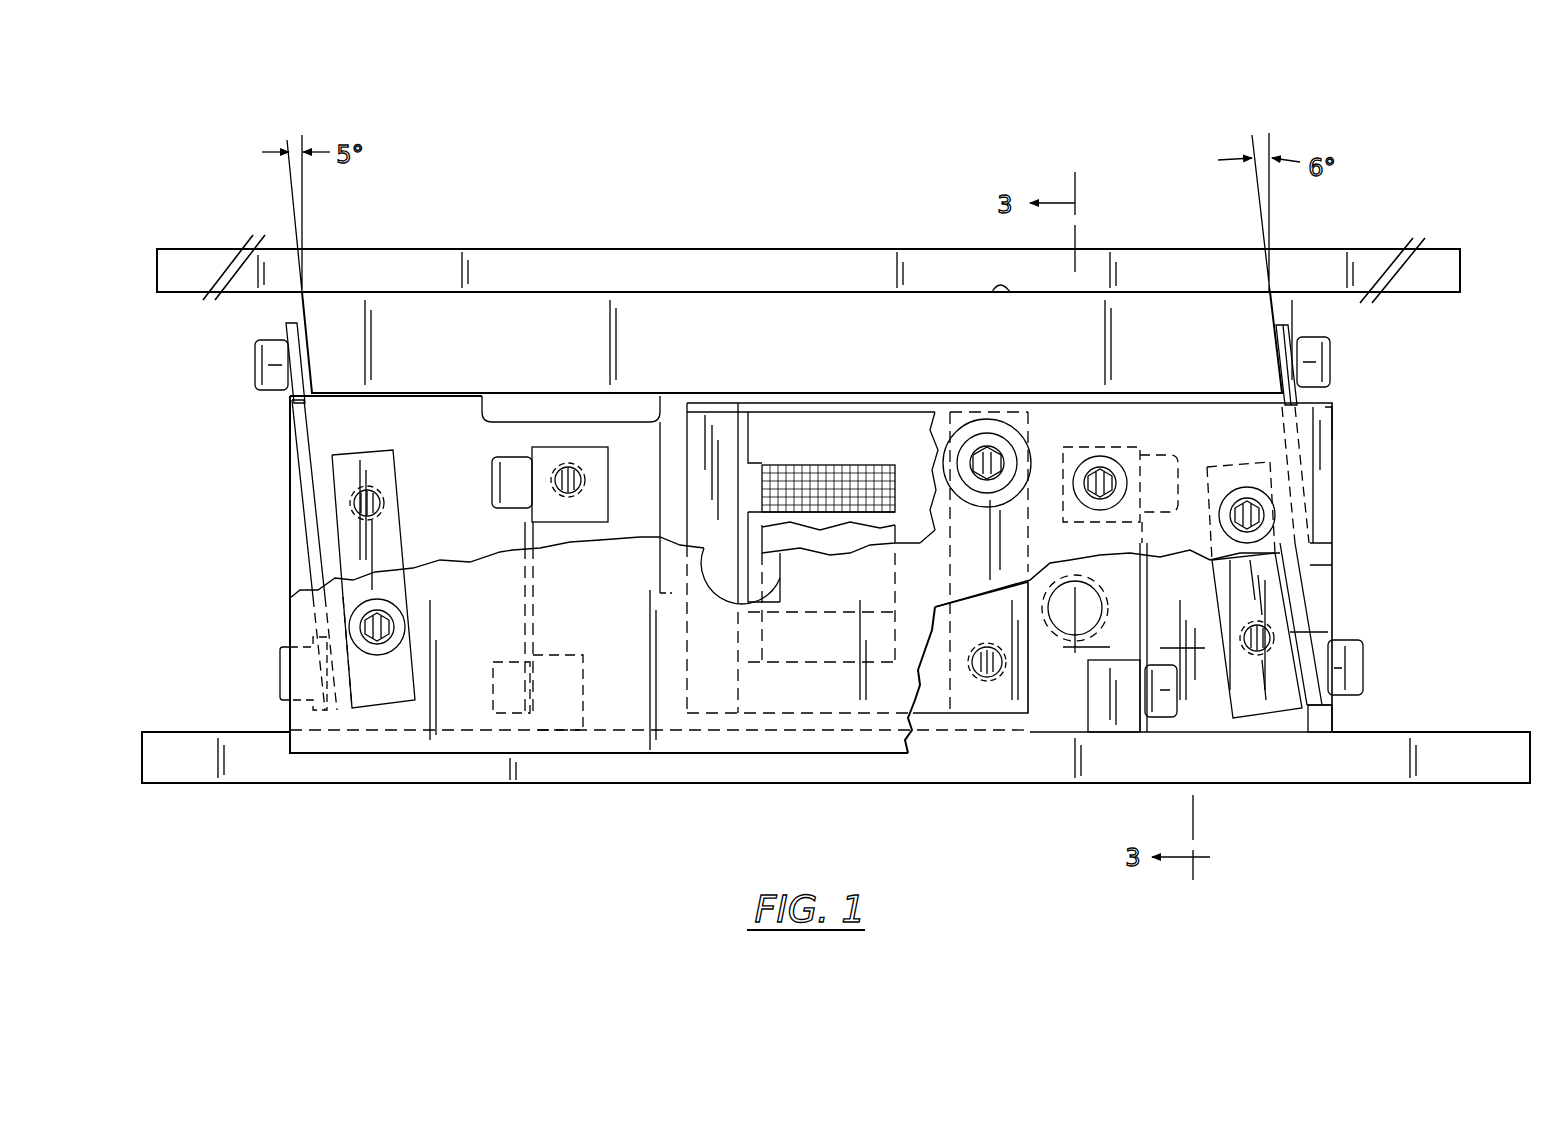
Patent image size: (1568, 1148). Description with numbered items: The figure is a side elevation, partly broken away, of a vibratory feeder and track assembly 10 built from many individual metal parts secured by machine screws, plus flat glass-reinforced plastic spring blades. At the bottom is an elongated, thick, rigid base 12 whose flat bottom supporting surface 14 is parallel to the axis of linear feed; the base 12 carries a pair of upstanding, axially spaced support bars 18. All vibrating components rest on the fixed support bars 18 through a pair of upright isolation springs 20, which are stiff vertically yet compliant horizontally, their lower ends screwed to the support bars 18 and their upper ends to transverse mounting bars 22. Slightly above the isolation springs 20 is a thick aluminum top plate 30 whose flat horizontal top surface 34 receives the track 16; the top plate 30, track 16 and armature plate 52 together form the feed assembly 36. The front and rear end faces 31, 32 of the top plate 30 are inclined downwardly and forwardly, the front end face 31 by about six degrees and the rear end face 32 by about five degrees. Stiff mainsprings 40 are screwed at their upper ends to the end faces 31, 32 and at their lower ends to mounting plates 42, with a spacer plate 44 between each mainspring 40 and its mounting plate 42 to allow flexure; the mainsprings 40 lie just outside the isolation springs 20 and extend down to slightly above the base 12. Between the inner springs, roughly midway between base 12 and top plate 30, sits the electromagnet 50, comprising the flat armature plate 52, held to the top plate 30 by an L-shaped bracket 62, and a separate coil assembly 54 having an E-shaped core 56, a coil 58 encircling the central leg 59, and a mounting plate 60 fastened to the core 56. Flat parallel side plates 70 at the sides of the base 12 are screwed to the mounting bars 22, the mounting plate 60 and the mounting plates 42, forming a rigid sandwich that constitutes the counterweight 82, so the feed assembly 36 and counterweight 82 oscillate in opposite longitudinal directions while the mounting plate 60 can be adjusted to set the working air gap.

The vibratory feeder and track assembly 10 is at (1400, 150).
The base 12 is at (1468, 733).
The bottom supporting surface 14 is at (1262, 785).
The track 16 is at (1170, 249).
The support bars 18 is at (553, 655).
The isolation springs 20 is at (525, 540).
The mounting bars 22 is at (545, 449).
The top plate 30 is at (741, 338).
The front end face 31 is at (1277, 308).
The rear end face 32 is at (300, 305).
The top surface 34 is at (995, 292).
The feed assembly 36 is at (838, 247).
The mainsprings 40 is at (305, 462).
The mounting plates 42 is at (363, 450).
The spacer plate 44 is at (330, 712).
The electromagnet 50 is at (765, 430).
The armature plate 52 is at (713, 418).
The coil assembly 54 is at (862, 411).
The E-shaped core 56 is at (864, 450).
The coil 58 is at (842, 470).
The central leg 59 is at (746, 540).
The mounting plate 60 is at (971, 626).
The L-shaped bracket 62 is at (660, 452).
The side plates 70 is at (1334, 478).
The counterweight 82 is at (1340, 425).